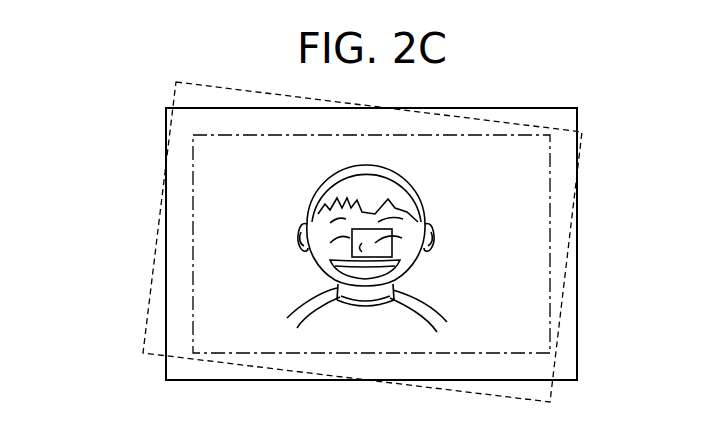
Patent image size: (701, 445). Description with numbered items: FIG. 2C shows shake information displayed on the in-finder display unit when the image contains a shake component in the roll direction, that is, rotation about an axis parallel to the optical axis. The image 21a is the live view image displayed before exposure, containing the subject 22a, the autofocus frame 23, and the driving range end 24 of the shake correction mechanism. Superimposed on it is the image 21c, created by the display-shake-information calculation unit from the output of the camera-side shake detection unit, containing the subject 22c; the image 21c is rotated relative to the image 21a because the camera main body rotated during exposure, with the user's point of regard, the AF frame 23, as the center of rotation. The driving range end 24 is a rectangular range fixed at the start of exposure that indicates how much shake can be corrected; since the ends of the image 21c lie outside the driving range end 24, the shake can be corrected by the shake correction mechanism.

The image 21a is at (222, 381).
The image 21c is at (158, 222).
The subject 22a is at (297, 320).
The subject 22c is at (305, 296).
The autofocus (AF) frame 23 is at (412, 265).
The driving range end of shake correction mechanism 24 is at (442, 136).